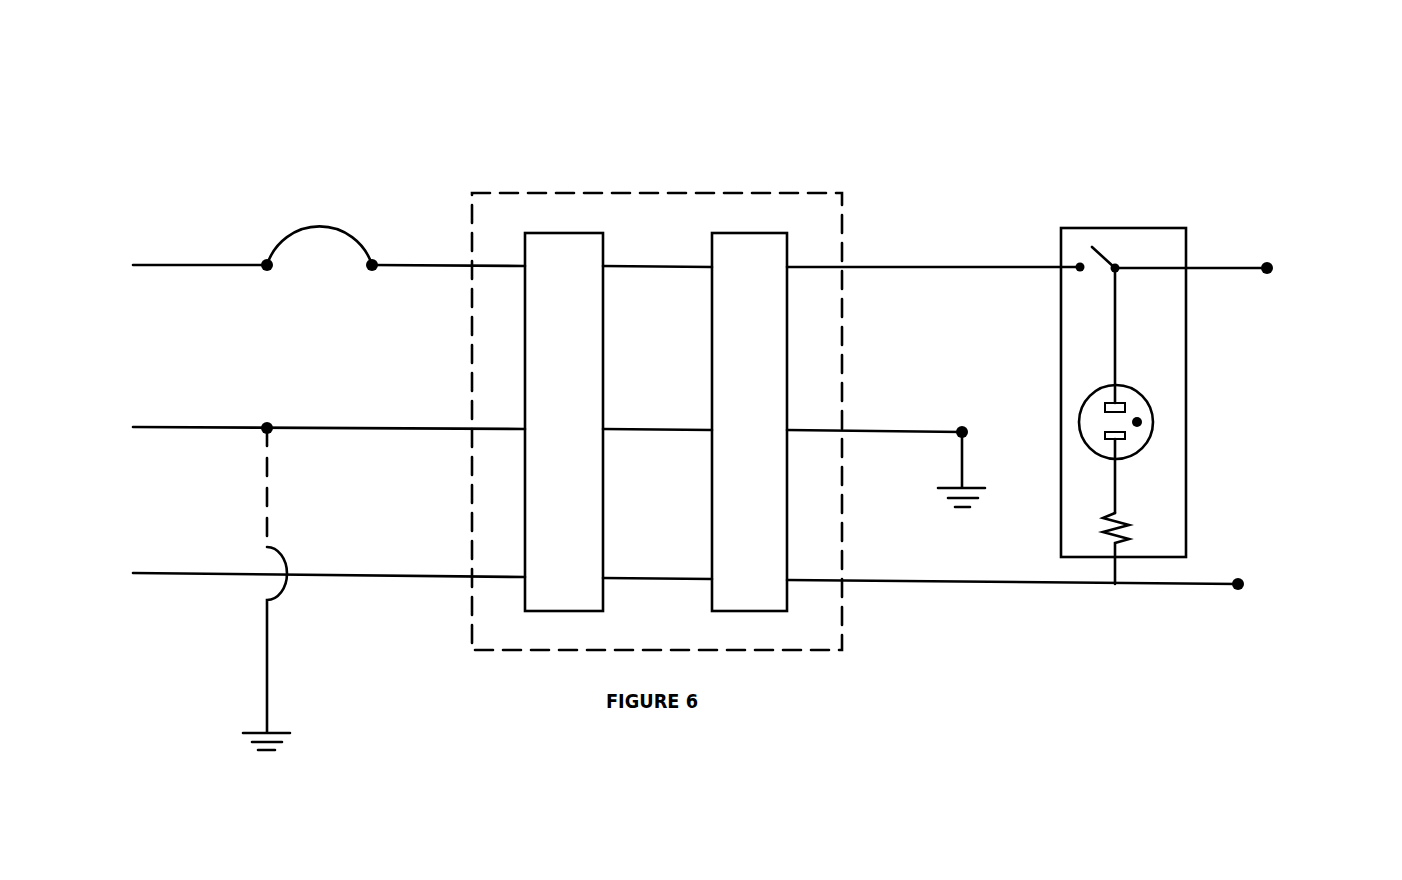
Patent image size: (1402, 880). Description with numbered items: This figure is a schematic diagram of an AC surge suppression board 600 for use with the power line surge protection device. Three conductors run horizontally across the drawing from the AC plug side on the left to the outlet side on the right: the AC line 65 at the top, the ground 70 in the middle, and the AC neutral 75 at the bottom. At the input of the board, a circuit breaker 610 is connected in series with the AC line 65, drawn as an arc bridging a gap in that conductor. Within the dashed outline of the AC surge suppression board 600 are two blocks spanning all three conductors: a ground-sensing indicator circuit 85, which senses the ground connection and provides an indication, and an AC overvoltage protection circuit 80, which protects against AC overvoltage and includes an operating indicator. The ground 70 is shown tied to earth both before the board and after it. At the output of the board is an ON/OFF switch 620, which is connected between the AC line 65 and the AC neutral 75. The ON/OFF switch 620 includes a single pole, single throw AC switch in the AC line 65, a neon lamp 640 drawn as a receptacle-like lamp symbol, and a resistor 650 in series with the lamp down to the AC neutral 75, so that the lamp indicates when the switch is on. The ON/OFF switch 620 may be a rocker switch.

The AC line 65 is at (702, 267).
The ground 70 is at (551, 584).
The AC neutral 75 is at (689, 579).
The AC overvoltage protection circuit 80 is at (749, 422).
The ground-sensing indicator circuit 85 is at (564, 422).
The AC surge suppression board 600 is at (592, 193).
The circuit breaker 610 is at (318, 215).
The ON/OFF switch 620 is at (1107, 240).
The neon lamp 640 is at (1187, 418).
The resistor 650 is at (1187, 537).